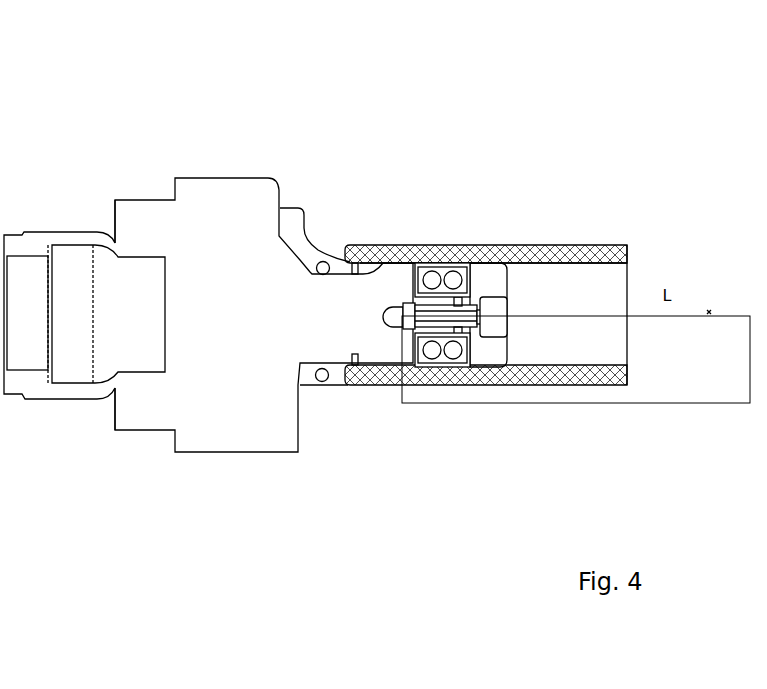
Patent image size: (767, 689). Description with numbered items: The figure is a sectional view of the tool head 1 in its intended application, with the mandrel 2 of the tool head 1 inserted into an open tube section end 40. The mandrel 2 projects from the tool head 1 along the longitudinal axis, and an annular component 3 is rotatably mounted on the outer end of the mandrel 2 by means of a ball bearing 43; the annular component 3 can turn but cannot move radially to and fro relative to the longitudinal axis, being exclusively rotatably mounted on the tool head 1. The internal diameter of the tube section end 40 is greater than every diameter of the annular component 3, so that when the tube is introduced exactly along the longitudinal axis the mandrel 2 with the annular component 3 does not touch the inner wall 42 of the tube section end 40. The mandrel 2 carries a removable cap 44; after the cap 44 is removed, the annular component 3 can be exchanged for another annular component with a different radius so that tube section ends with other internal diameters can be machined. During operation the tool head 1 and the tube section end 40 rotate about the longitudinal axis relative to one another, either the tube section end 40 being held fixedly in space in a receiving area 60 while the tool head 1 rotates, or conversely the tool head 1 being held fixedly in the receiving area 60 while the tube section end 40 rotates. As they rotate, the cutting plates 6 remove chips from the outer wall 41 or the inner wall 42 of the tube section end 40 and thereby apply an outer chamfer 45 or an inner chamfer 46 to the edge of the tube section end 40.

The tool head 1 is at (265, 172).
The mandrel 2 is at (420, 262).
The annular component 3 is at (522, 298).
The cutting plates 6 is at (325, 261).
The tube section end 40 is at (522, 306).
The outer wall 41 is at (417, 245).
The inner wall 42 is at (555, 263).
The ball bearing 43 is at (468, 268).
The removable cap 44 is at (500, 370).
The outer chamfer 45 is at (348, 245).
The inner chamfer 46 is at (333, 385).
The receiving area 60 is at (678, 394).